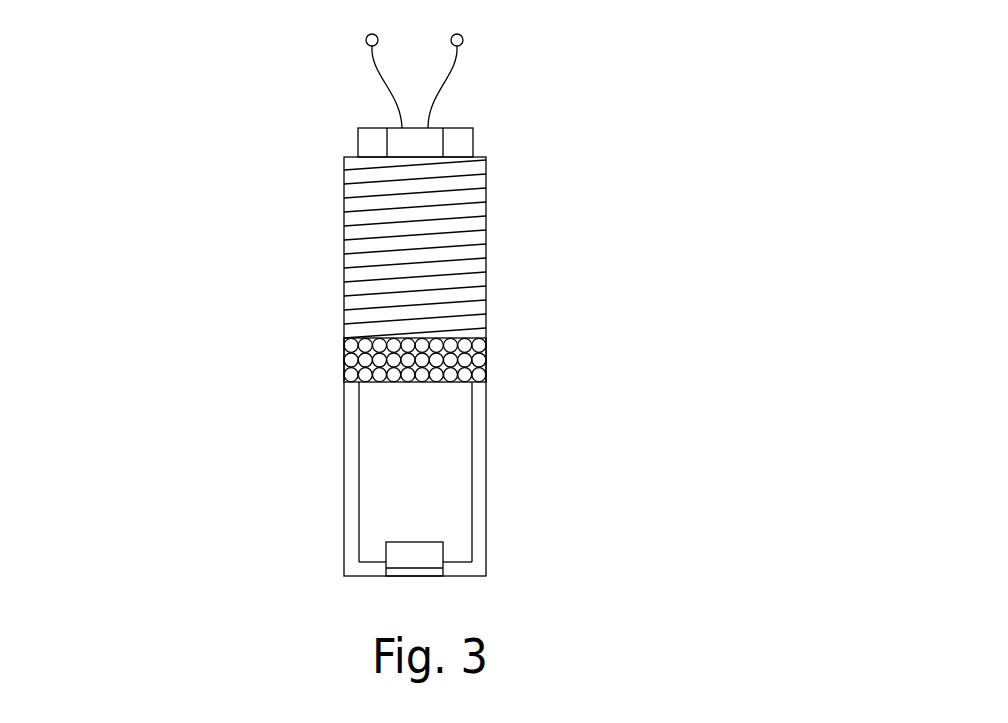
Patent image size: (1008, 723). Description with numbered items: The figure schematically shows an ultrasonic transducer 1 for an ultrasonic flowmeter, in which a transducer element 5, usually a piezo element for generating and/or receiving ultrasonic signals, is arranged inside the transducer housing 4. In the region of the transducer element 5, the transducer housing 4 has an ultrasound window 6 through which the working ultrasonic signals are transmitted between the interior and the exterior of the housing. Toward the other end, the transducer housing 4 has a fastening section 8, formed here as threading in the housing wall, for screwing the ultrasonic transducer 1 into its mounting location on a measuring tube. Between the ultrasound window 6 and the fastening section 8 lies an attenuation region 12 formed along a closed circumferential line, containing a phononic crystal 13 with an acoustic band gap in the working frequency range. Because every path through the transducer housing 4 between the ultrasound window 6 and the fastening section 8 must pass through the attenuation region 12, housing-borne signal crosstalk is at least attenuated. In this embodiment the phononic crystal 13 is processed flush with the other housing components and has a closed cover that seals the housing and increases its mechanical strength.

The ultrasonic transducer 1 is at (622, 75).
The transducer housing 4 is at (292, 213).
The transducer element 5 is at (399, 557).
The ultrasound window 6 is at (552, 580).
The fastening section 8 is at (513, 157).
The attenuation region 12 is at (259, 380).
The phononic crystal 13 is at (415, 360).